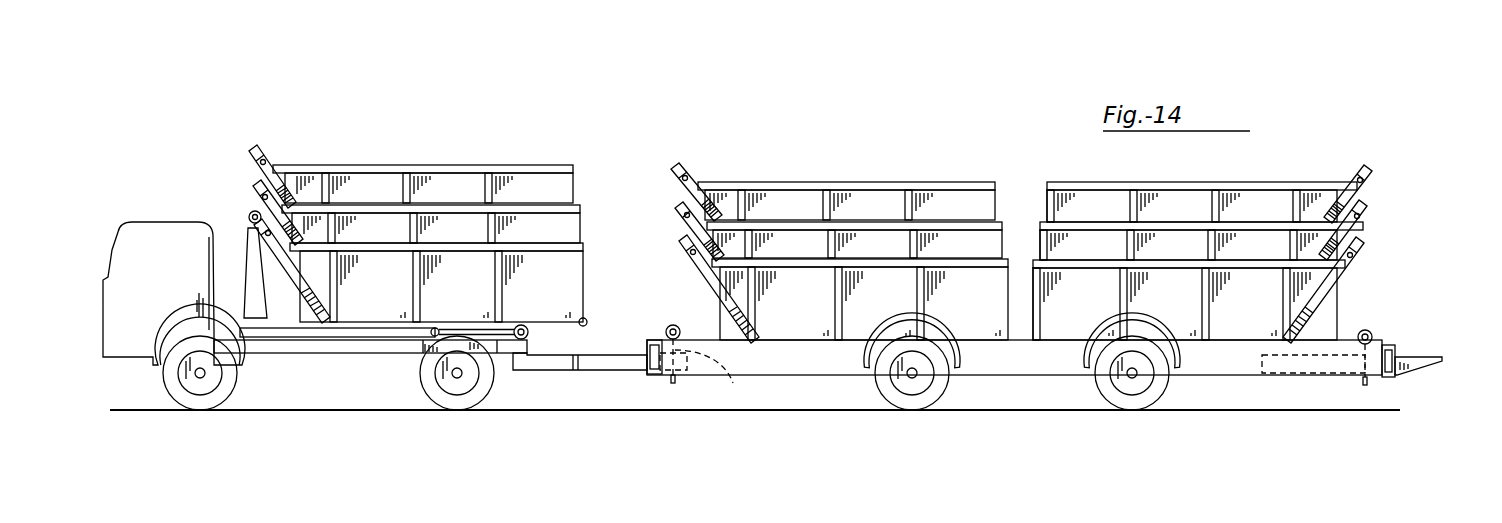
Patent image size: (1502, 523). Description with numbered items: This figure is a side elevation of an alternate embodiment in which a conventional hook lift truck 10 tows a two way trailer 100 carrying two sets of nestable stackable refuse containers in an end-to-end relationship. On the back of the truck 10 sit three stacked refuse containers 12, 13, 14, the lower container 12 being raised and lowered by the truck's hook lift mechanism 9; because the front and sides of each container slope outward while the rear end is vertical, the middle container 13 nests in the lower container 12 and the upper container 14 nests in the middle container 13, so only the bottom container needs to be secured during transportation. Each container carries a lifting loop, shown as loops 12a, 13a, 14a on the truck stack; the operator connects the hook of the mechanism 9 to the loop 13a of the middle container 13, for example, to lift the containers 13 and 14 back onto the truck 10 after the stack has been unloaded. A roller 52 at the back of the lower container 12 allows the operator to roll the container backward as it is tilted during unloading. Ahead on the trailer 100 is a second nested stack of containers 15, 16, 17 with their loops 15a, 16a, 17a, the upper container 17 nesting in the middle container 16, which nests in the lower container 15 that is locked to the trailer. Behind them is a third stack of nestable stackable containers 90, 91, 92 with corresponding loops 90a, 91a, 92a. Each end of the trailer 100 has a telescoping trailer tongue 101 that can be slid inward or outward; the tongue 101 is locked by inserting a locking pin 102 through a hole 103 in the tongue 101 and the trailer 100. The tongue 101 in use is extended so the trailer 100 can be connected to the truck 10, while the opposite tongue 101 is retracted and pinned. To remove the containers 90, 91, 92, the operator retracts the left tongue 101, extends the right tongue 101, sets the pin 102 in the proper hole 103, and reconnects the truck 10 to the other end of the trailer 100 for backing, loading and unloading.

The hook lift mechanism 9 is at (247, 307).
The hook lift truck 10 is at (162, 216).
The lower stackable refuse container 12 is at (587, 273).
The lift arm for lower container 12a is at (247, 217).
The middle stackable refuse container 13 is at (582, 218).
The loop 13a is at (256, 182).
The upper stackable refuse container 14 is at (577, 177).
The lift arm for upper container 14a is at (256, 148).
The lower stackable refuse container on trailer 15 is at (1010, 266).
The lift arm for container 15 15a is at (683, 238).
The middle stackable refuse container on trailer 16 is at (1004, 224).
The lift arm for container 16 16a is at (677, 204).
The upper stackable refuse container on trailer 17 is at (928, 181).
The lift arm for container 17 17a is at (680, 164).
The roller 52 is at (580, 326).
The nestable stackable container 90 is at (1346, 284).
The lift arm for container 90 90a is at (1360, 242).
The nestable stackable container 91 is at (1361, 224).
The lift arm for container 91 91a is at (1367, 201).
The nestable stackable container 92 is at (1361, 190).
The lift arm for container 92 92a is at (1366, 167).
The two way trailer 100 is at (787, 377).
The telescoping trailer tongue 101 is at (615, 372).
The locking pin 102 is at (678, 329).
The hole 103 is at (578, 372).